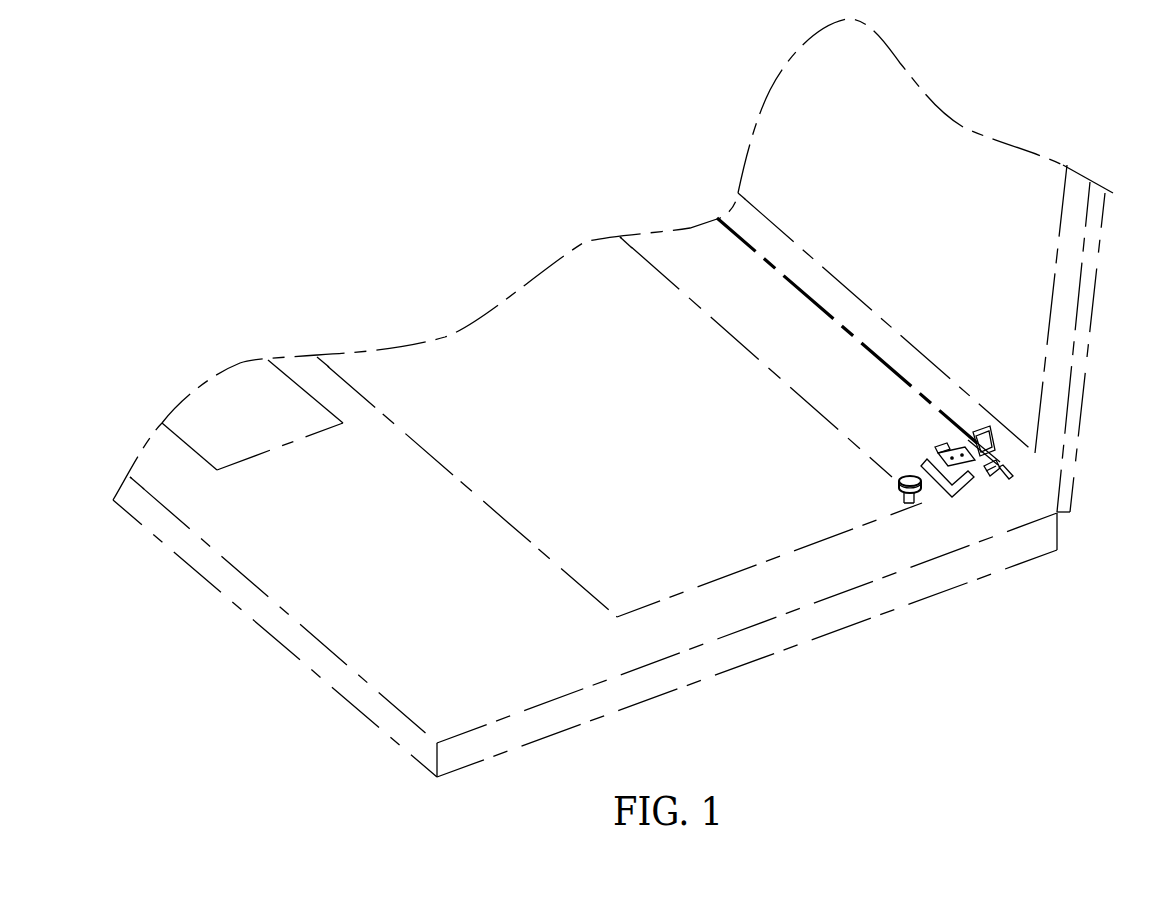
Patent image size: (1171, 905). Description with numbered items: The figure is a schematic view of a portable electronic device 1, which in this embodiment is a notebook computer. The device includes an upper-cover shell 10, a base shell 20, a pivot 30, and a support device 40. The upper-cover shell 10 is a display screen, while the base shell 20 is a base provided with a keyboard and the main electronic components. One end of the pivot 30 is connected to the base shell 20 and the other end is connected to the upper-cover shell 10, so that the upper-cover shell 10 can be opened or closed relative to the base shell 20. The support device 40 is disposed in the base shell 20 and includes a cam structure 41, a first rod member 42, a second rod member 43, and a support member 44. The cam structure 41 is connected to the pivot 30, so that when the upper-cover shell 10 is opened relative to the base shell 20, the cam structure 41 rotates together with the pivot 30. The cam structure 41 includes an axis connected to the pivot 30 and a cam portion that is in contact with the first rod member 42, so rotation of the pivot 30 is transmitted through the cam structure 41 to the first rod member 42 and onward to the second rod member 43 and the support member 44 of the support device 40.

The portable electronic device 1 is at (237, 102).
The upper-cover shell 10 is at (1067, 347).
The base shell 20 is at (828, 610).
The pivot 30 is at (962, 440).
The support device 40 is at (876, 481).
The cam structure 41 is at (1010, 478).
The first rod member 42 is at (988, 480).
The second rod member 43 is at (943, 497).
The support member 44 is at (905, 503).